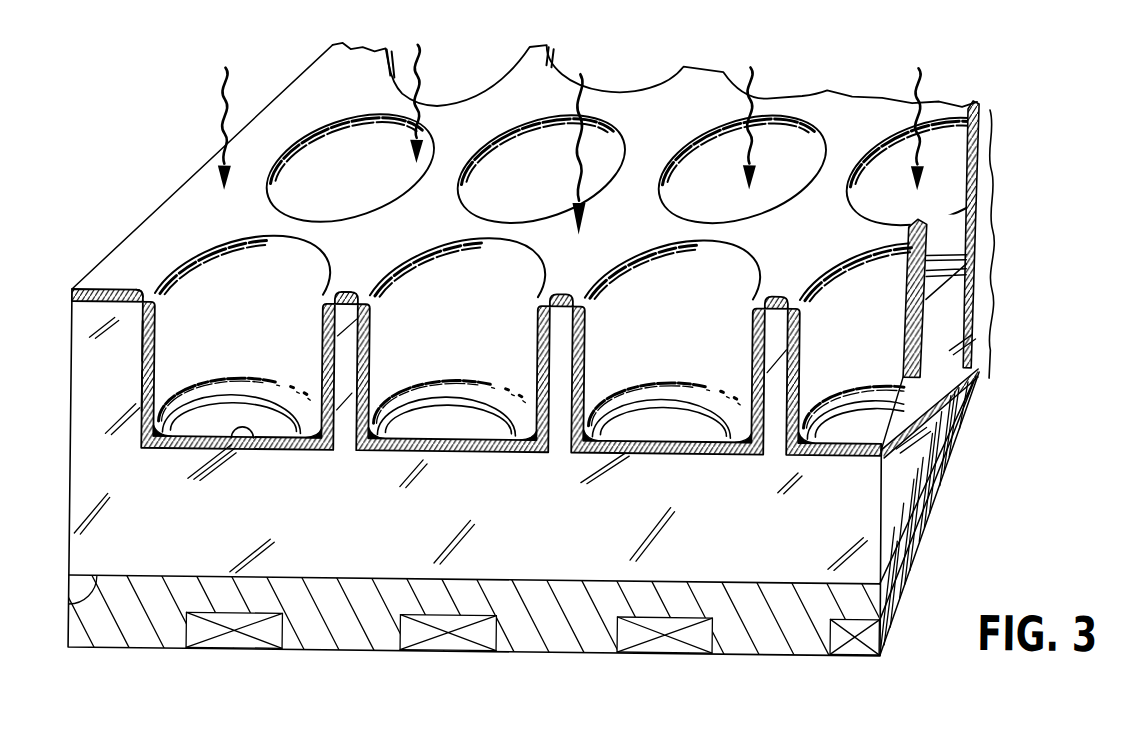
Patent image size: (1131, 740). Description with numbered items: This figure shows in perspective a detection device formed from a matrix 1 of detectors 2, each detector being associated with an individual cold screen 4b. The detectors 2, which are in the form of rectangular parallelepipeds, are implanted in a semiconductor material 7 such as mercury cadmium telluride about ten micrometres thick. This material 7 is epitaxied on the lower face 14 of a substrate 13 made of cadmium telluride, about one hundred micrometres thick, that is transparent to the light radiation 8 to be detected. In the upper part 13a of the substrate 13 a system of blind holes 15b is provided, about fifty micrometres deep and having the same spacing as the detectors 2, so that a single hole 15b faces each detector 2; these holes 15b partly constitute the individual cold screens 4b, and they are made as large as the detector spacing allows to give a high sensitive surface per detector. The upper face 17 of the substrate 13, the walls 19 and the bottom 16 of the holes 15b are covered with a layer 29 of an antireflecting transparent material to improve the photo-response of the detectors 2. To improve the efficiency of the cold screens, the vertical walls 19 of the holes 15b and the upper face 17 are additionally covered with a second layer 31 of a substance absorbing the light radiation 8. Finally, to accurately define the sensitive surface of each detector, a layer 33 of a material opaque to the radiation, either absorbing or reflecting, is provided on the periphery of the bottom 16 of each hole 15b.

The matrix 1 is at (889, 655).
The detectors 2 is at (628, 626).
The individual cold screen 4b is at (1066, 229).
The semiconductor material 7 is at (337, 623).
The light radiation 8 is at (221, 86).
The substrate 13 is at (991, 347).
The upper part of transparent substrate 13a is at (993, 122).
The lower face 14 is at (71, 601).
The blind holes 15b is at (227, 263).
The bottom 16 is at (254, 438).
The upper face 17 is at (347, 300).
The walls 19 is at (155, 313).
The layer of antireflecting transparent material 29 is at (144, 340).
The second layer 31 is at (146, 392).
The layer of opaque material 33 is at (160, 428).